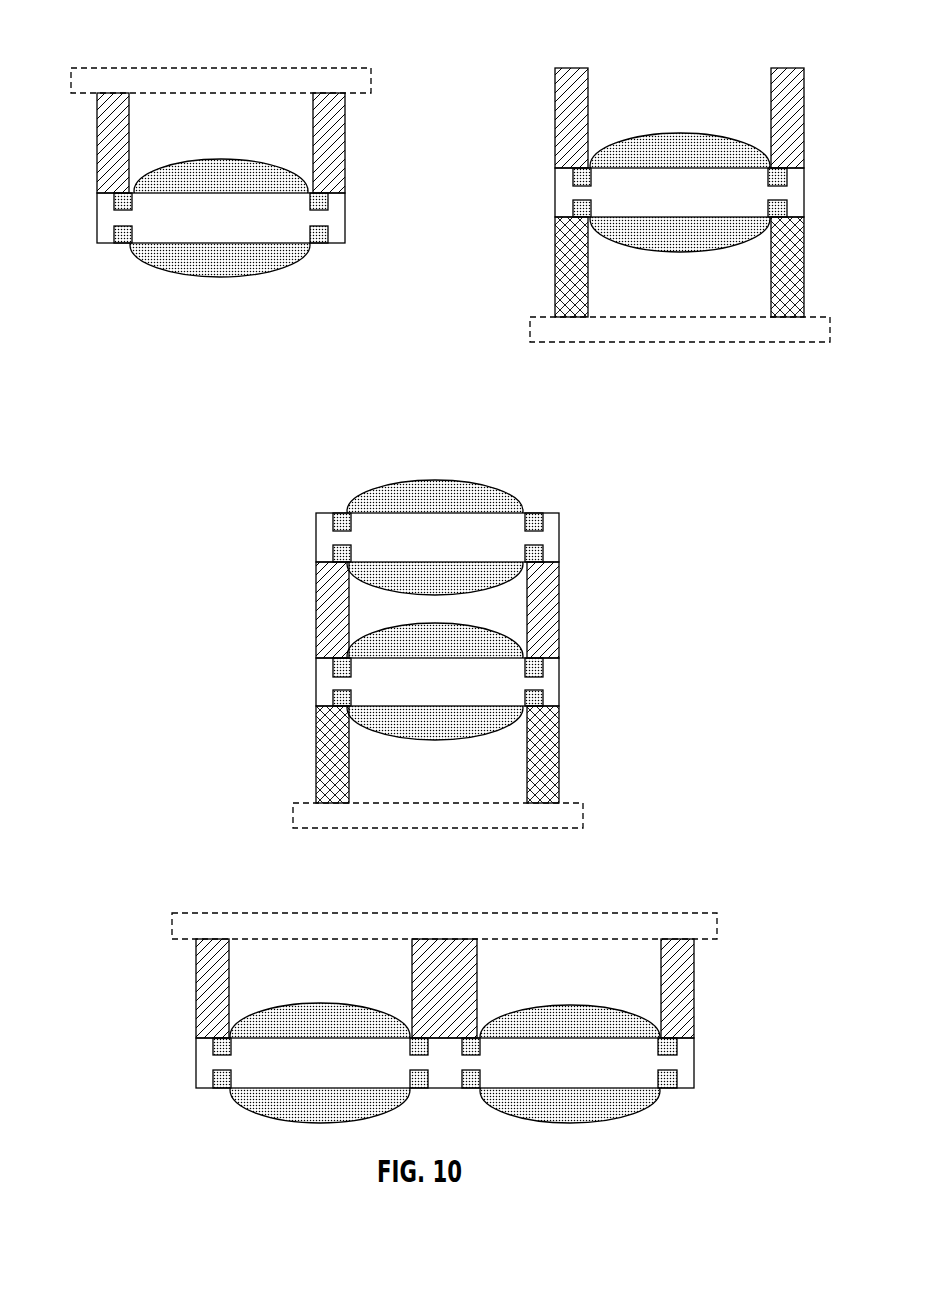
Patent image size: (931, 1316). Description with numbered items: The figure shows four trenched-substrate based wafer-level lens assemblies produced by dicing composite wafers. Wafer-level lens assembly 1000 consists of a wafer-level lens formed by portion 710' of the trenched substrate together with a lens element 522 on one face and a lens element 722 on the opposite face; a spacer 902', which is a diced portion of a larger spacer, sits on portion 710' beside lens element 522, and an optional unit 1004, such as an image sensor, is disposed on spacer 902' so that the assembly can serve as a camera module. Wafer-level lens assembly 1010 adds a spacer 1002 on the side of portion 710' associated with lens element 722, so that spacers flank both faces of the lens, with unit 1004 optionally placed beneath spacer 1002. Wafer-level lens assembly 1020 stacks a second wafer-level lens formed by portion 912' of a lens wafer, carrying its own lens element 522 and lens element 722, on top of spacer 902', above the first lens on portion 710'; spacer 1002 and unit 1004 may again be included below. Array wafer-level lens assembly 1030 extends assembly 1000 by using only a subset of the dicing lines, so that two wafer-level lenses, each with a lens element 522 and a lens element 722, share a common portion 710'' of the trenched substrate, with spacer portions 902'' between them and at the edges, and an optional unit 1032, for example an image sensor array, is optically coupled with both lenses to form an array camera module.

The wafer-level lens assembly 1000 is at (76, 49).
The wafer-level lens assembly 1010 is at (520, 45).
The wafer-level lens assembly 1020 is at (283, 461).
The array wafer-level lens assembly 1030 is at (107, 911).
The unit 1004 is at (320, 68).
The unit 1032 is at (717, 923).
The spacer 1002 is at (555, 272).
The spacer 902' is at (423, 363).
The spacer 902'' is at (417, 988).
The portion of lens wafer 912' is at (376, 537).
The portion of trenched substrate 710' is at (410, 437).
The portion of trenched substrate 710'' is at (392, 1063).
The lens element 522 is at (220, 159).
The lens element 722 is at (253, 273).